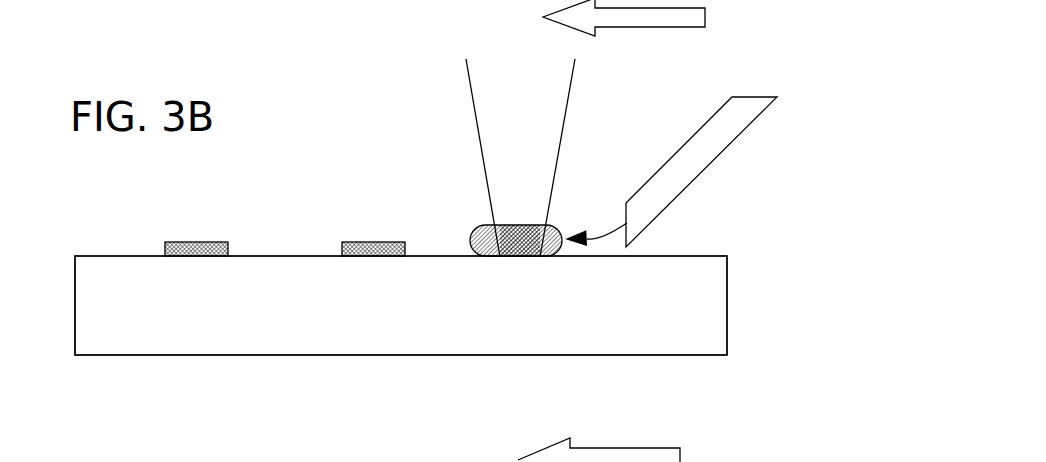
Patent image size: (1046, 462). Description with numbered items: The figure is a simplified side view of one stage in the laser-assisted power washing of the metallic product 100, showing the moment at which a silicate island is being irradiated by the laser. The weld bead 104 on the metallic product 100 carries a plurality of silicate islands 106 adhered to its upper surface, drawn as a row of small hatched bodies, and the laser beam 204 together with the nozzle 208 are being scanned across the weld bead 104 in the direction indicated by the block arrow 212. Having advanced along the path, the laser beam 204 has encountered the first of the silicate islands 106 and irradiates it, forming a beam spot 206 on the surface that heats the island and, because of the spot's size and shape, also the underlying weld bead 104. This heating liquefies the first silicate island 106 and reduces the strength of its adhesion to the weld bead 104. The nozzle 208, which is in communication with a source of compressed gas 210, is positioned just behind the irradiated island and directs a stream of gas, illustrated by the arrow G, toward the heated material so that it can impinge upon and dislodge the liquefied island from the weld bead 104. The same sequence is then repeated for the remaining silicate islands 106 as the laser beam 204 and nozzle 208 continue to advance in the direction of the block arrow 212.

The metallic product 100 is at (366, 223).
The weld bead 104 is at (205, 323).
The silicate islands 106 is at (227, 223).
The laser beam 204 is at (520, 158).
The beam spot 206 is at (401, 326).
The nozzle 208 is at (688, 168).
The source of compressed gas 210 is at (624, 18).
The block arrow 212 is at (599, 440).
The arrow G is at (597, 217).